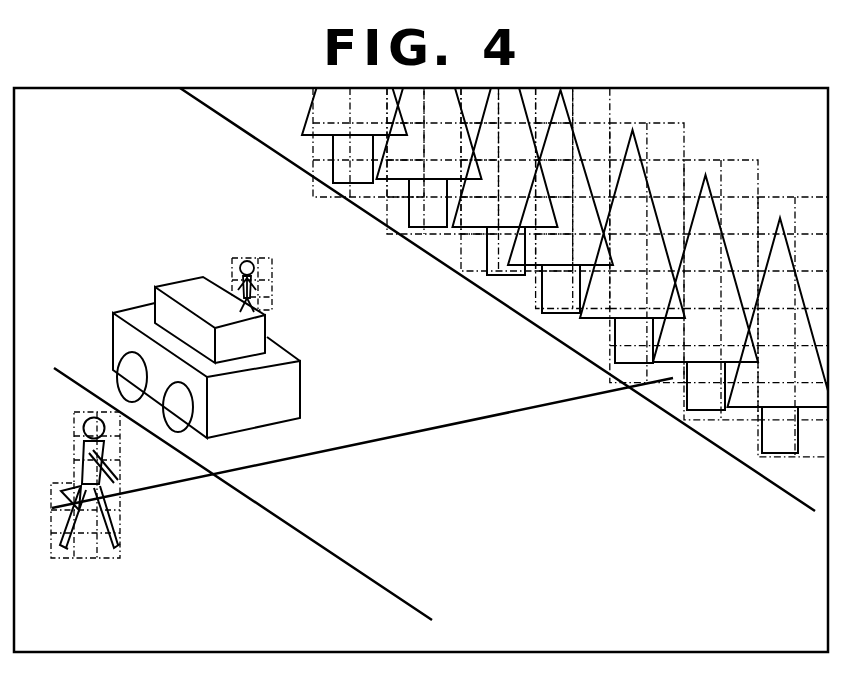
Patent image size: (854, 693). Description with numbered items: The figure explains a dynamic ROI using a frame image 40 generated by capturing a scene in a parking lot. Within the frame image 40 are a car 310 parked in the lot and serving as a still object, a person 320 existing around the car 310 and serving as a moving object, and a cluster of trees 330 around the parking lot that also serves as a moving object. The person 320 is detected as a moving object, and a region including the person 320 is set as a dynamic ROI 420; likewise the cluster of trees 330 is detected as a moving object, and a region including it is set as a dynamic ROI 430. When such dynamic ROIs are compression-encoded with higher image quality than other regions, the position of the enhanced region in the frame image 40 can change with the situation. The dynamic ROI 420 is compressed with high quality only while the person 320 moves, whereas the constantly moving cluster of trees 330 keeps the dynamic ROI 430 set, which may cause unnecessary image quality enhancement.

The frame image 40 is at (90, 86).
The car 310 is at (113, 320).
The person 320 is at (273, 288).
The cluster of trees 330 is at (492, 260).
The dynamic ROI 420 is at (233, 257).
The dynamic ROI 430 is at (553, 273).